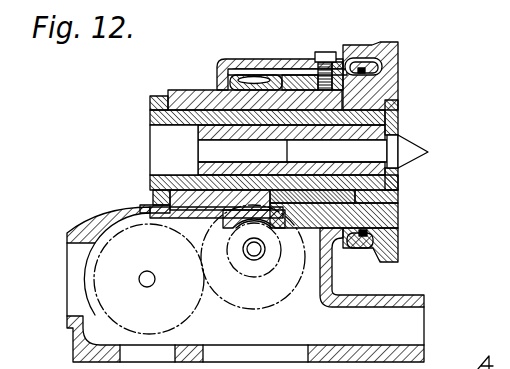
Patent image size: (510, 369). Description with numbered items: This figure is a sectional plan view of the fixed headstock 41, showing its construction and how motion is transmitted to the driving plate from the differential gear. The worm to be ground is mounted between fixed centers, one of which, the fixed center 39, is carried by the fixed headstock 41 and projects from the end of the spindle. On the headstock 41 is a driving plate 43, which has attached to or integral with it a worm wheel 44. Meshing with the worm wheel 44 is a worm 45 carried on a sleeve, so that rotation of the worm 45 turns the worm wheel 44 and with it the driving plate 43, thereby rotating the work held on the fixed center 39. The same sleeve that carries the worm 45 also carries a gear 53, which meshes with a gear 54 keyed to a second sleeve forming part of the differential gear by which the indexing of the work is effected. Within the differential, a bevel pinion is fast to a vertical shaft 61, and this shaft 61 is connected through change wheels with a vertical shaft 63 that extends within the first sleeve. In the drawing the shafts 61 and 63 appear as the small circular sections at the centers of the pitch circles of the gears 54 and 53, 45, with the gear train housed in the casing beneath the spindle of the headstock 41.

The fixed center 39 is at (428, 152).
The fixed headstock 41 is at (240, 62).
The driving plate 43 is at (399, 92).
The worm wheel 44 is at (262, 77).
The worm 45 is at (257, 277).
The gear 53 is at (256, 303).
The gear 54 is at (187, 312).
The vertical shaft 61 is at (150, 287).
The vertical shaft 63 is at (254, 260).